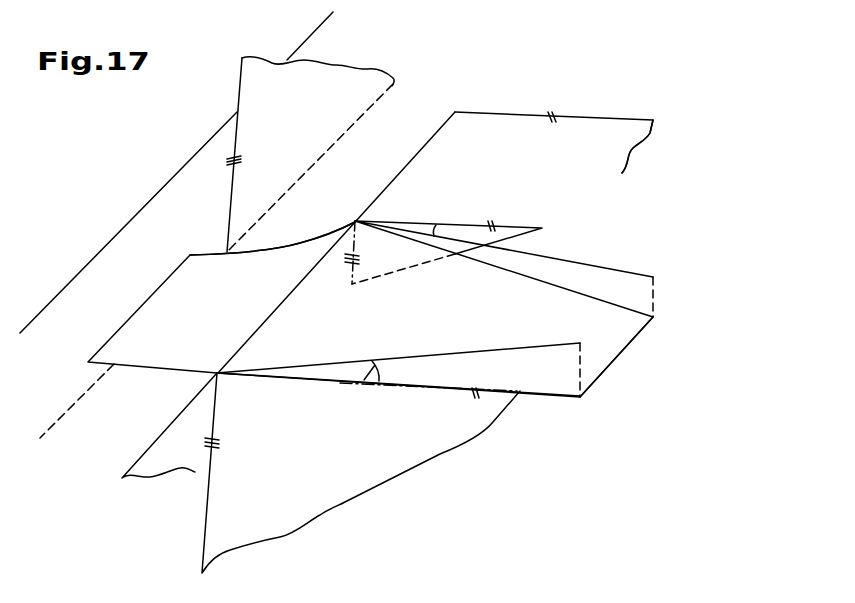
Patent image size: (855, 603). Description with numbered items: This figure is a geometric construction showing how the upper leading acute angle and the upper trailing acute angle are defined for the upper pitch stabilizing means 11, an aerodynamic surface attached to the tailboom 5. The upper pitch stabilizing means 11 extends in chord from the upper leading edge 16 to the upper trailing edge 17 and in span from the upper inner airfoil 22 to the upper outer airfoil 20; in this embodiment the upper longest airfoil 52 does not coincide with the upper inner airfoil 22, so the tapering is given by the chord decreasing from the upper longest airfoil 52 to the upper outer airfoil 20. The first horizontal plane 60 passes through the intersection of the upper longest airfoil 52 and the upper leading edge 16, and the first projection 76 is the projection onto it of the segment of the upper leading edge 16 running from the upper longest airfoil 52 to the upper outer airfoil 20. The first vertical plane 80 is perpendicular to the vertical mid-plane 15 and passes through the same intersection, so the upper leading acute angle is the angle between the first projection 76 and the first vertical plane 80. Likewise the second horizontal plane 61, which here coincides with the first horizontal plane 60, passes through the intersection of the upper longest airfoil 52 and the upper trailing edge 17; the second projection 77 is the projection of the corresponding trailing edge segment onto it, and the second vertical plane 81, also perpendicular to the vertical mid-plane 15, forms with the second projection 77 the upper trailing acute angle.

The tailboom 5 is at (142, 238).
The upper pitch stabilizing means 11 is at (608, 399).
The vertical mid-plane 15 is at (307, 96).
The upper leading edge 16 is at (540, 397).
The upper trailing edge 17 is at (262, 248).
The upper outer airfoil 20 is at (625, 352).
The upper inner airfoil 22 is at (148, 295).
The upper longest airfoil 52 is at (288, 296).
The first horizontal plane 60 is at (607, 133).
The second horizontal plane 61 is at (570, 150).
The first projection 76 is at (455, 353).
The second projection 77 is at (598, 268).
The first vertical plane 80 is at (243, 515).
The second vertical plane 81 is at (503, 240).